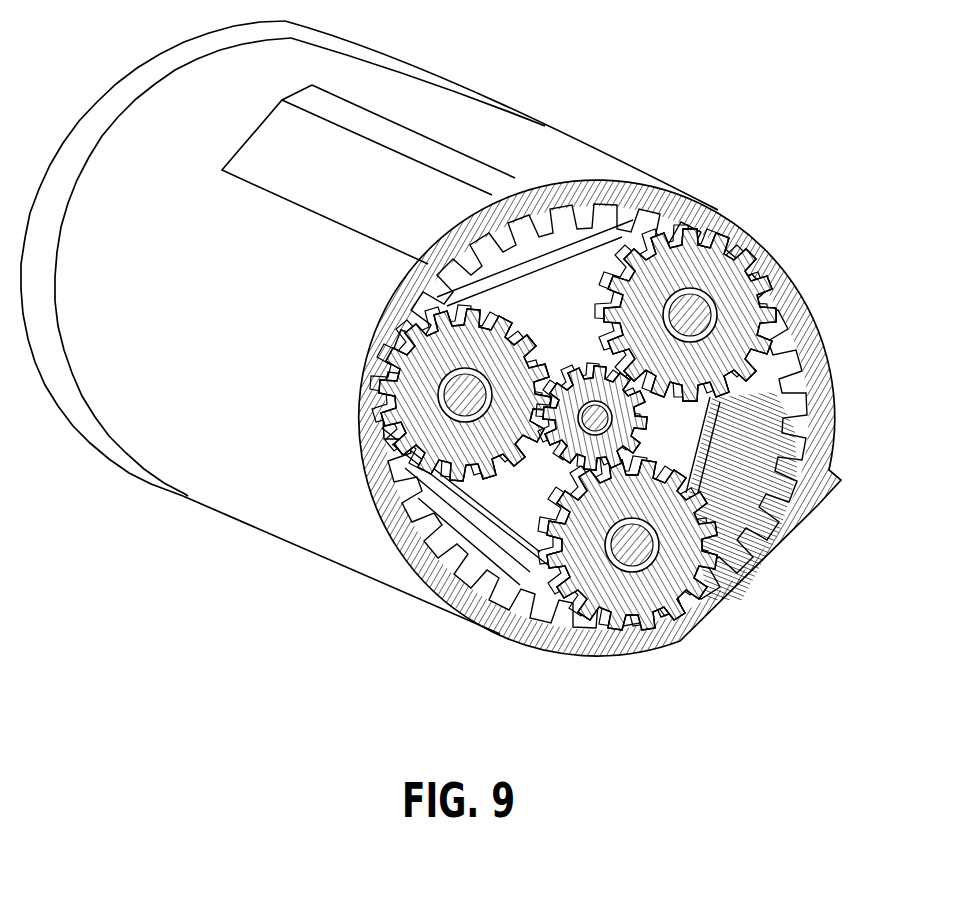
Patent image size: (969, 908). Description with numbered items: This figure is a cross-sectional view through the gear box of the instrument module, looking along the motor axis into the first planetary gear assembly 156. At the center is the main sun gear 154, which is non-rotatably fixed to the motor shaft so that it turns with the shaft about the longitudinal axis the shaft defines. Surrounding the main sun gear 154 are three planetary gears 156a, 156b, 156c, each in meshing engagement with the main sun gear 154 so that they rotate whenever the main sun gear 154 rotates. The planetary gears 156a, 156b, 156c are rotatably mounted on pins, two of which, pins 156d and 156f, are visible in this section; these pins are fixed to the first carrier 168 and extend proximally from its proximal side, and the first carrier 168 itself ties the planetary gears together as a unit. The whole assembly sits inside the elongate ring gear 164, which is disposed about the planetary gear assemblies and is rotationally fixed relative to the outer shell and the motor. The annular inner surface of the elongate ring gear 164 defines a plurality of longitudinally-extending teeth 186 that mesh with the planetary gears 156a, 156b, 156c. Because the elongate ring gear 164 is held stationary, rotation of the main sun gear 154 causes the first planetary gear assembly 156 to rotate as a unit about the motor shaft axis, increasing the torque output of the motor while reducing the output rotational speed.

The main sun gear 154 is at (573, 362).
The first planetary gear assembly 156 is at (519, 435).
The planetary gear 156a is at (710, 279).
The planetary gear 156b is at (737, 600).
The planetary gear 156c is at (447, 509).
The pin 156d is at (693, 317).
The pin 156f is at (462, 412).
The elongate ring gear 164 is at (541, 124).
The first carrier 168 is at (522, 290).
The longitudinally-extending teeth 186 is at (807, 423).